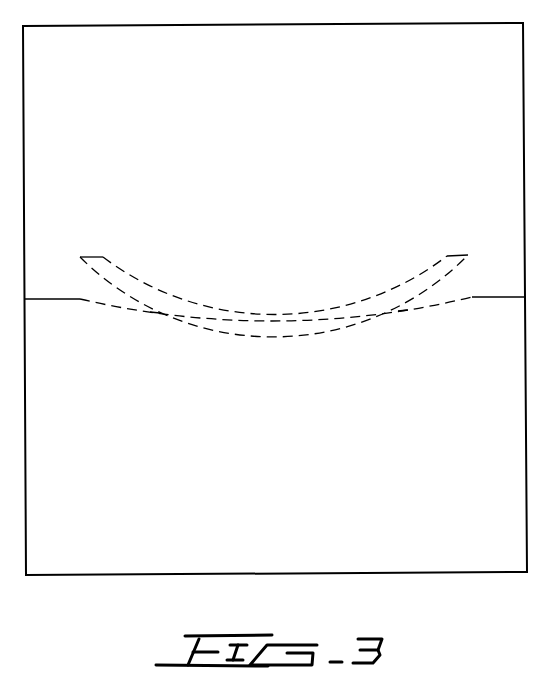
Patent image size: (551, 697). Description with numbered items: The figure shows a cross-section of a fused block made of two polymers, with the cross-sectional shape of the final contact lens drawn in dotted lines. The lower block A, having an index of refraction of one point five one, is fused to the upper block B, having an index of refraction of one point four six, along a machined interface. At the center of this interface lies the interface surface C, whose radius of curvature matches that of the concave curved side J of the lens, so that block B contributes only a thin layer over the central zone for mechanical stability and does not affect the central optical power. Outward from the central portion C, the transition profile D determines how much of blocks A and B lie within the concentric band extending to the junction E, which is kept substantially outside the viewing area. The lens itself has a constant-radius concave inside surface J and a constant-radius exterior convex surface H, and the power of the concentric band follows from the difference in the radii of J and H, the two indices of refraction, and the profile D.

The block of polymer A is at (275, 417).
The block B is at (275, 299).
The interface surface C is at (259, 332).
The transition profile D is at (172, 327).
The junction E is at (419, 317).
The exterior convex surface H is at (350, 342).
The concave curved side J is at (305, 298).